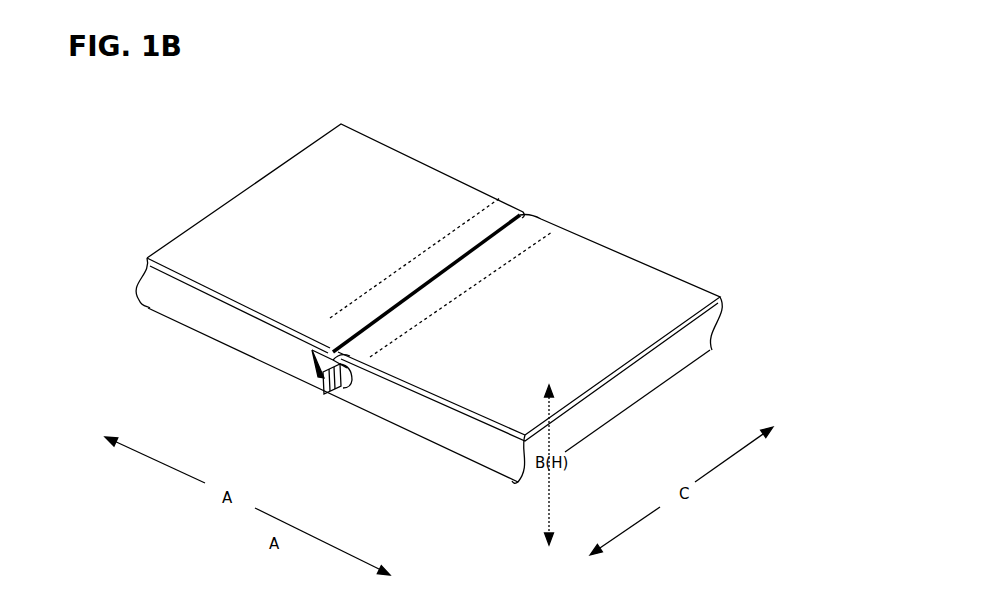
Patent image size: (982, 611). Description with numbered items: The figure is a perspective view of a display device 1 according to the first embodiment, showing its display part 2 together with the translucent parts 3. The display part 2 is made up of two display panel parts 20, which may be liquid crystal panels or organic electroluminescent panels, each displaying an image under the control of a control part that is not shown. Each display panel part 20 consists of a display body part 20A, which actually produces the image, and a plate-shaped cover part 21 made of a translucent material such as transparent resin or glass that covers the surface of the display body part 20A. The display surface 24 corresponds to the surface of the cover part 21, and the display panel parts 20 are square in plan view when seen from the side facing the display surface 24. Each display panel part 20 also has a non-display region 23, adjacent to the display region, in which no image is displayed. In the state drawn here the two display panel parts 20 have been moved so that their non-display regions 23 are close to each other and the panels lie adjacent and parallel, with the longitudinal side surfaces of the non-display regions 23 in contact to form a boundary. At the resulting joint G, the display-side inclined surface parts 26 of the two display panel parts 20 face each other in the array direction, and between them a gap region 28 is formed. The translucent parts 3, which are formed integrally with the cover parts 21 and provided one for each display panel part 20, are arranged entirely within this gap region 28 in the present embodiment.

The display device 1 is at (427, 308).
The display part 2 is at (384, 309).
The translucent part 3 is at (410, 287).
The display panel part 20 is at (427, 303).
The display body part 20A is at (240, 332).
The cover part 21 is at (343, 249).
The non-display region 23 is at (328, 390).
The display surface 24 is at (221, 270).
The display-side inclined surface part 26 is at (312, 359).
The gap region 28 is at (321, 379).
The joint G is at (480, 238).